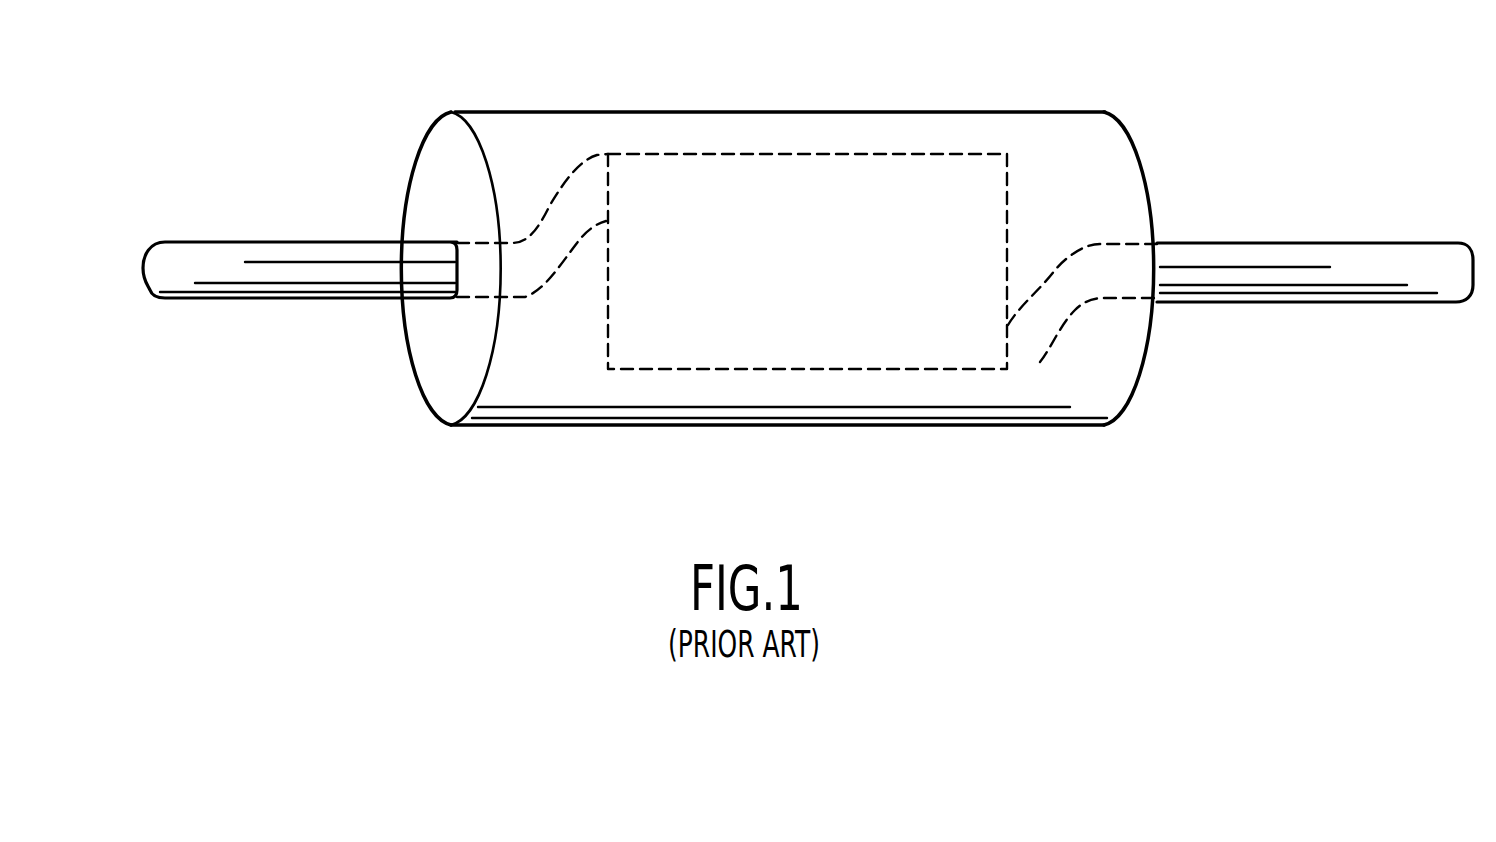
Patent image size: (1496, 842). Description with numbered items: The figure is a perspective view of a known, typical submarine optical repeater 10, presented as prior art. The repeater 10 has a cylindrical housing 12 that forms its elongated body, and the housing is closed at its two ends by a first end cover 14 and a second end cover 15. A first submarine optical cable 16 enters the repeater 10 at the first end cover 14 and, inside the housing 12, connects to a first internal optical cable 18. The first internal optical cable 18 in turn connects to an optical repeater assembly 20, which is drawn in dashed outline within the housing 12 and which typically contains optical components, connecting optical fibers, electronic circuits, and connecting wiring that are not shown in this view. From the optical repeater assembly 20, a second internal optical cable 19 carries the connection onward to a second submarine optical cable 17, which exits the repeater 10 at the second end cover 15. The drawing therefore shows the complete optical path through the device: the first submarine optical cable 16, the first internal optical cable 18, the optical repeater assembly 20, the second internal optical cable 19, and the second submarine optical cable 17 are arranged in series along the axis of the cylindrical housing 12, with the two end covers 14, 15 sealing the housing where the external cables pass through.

The submarine optical repeater 10 is at (833, 431).
The cylindrical housing 12 is at (742, 124).
The first end cover 14 is at (1156, 362).
The second end cover 15 is at (438, 373).
The first submarine optical cable 16 is at (1261, 238).
The second submarine optical cable 17 is at (223, 310).
The first internal optical cable 18 is at (1048, 364).
The second internal optical cable 19 is at (534, 300).
The optical repeater assembly 20 is at (767, 346).